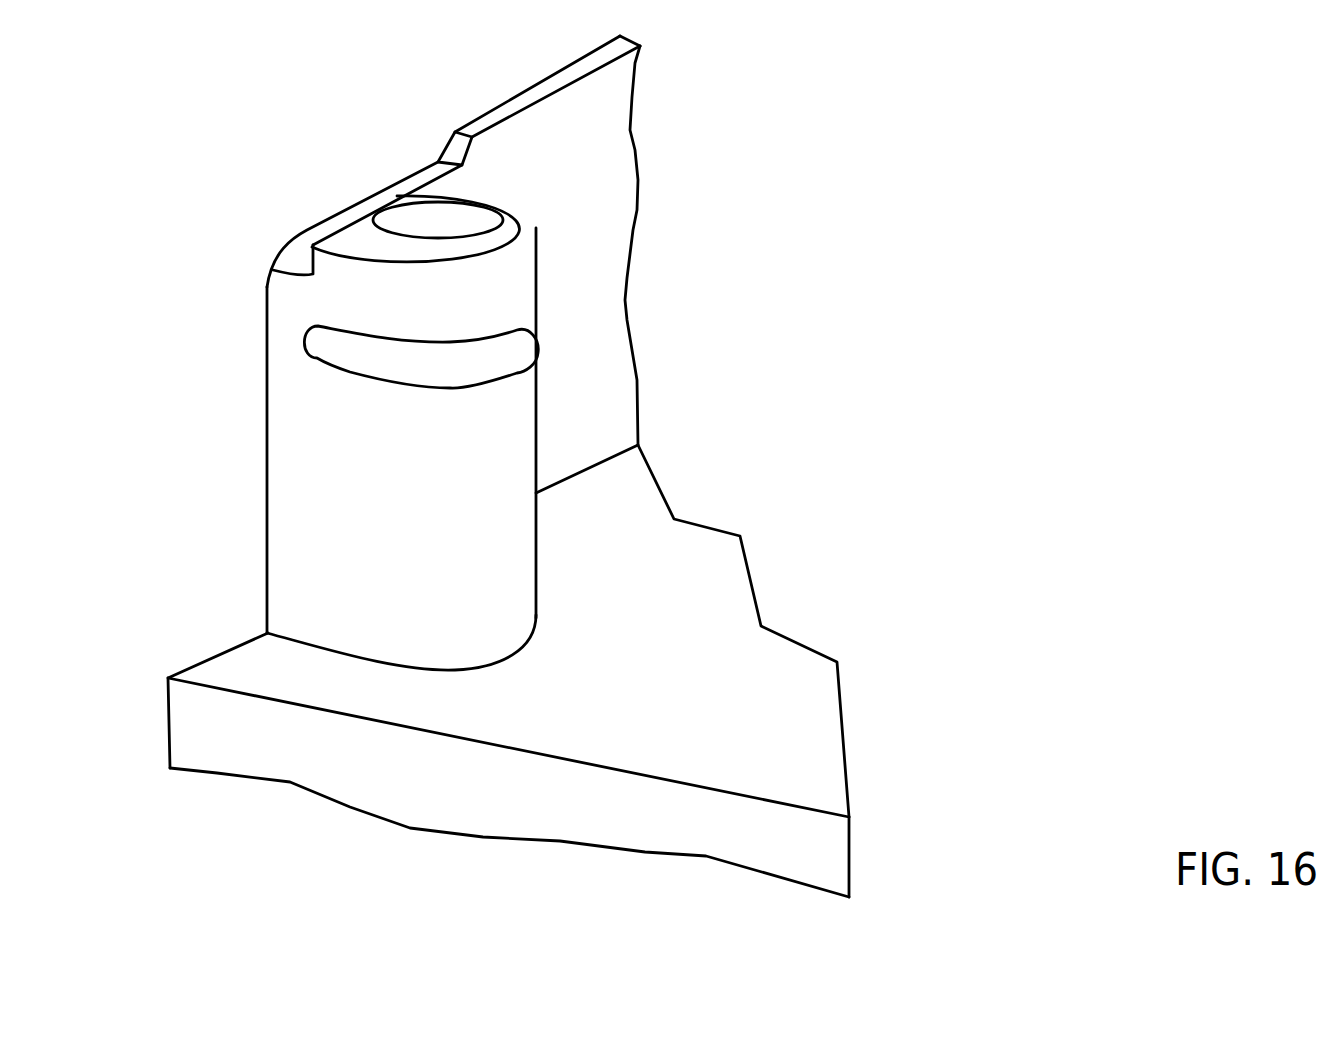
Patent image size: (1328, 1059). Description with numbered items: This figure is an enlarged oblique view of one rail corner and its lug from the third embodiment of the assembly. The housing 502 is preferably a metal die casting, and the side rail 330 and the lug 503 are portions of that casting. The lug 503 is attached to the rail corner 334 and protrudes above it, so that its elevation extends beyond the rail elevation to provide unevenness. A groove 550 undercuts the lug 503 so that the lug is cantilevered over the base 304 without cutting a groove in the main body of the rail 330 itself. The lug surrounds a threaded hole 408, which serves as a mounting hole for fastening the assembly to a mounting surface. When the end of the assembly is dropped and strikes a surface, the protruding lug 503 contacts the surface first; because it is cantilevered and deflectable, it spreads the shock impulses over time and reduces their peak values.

The first side rail 330 is at (597, 72).
The first rail corner 334 is at (308, 228).
The threaded hole 408 is at (427, 222).
The second lug 503 is at (540, 263).
The groove 550 is at (513, 348).
The base 304 is at (663, 493).
The housing 502 is at (180, 748).